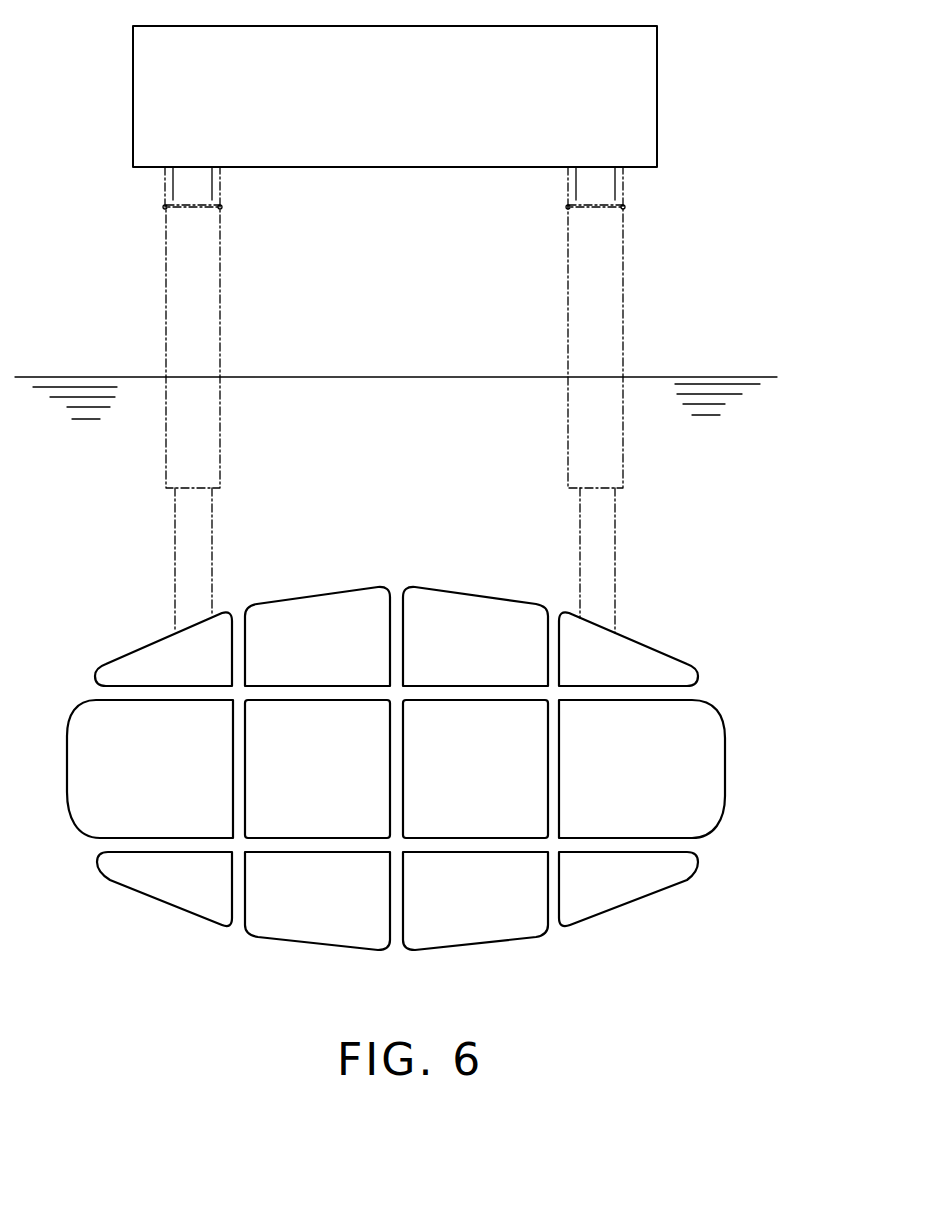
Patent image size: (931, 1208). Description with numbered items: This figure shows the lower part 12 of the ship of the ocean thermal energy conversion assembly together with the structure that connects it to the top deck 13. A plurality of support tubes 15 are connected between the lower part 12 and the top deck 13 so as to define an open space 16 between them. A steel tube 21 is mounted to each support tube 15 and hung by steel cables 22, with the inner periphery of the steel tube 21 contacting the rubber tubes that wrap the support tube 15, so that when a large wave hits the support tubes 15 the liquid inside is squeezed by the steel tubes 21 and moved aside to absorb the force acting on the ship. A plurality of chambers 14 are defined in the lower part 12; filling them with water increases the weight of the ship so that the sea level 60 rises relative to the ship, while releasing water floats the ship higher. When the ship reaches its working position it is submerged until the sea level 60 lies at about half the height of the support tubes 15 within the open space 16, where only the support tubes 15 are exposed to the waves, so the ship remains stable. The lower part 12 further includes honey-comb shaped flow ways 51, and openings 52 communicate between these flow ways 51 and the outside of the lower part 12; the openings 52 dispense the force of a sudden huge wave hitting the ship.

The lower part 12 is at (435, 804).
The top deck 13 is at (657, 72).
The chambers 14 is at (690, 808).
The support tubes 15 is at (612, 578).
The open space 16 is at (447, 187).
The steel tube 21 is at (620, 283).
The steel cables 22 is at (623, 186).
The honey-comb shaped flow ways 51 is at (605, 842).
The openings 52 is at (545, 930).
The sea level 60 is at (70, 377).